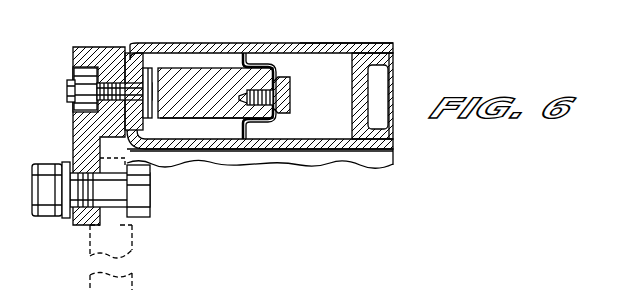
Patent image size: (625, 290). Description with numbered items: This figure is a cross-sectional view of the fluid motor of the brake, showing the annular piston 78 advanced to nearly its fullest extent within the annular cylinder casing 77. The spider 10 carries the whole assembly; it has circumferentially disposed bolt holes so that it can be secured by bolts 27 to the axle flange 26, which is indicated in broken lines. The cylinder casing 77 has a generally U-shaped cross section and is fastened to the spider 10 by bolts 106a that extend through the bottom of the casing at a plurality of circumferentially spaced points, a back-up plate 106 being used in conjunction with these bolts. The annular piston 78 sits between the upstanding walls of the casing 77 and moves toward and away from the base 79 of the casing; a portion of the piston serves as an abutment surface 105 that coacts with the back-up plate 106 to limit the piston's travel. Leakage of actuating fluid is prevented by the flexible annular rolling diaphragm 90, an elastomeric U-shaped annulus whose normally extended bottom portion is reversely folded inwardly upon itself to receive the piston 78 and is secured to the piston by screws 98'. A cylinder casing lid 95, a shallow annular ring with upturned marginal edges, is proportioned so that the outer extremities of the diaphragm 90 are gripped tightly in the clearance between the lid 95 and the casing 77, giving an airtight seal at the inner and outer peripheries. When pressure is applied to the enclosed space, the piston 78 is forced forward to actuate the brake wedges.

The spider 10 is at (85, 53).
The base of the casing 79 is at (128, 57).
The back-up plate 106 is at (145, 68).
The bolts 106a is at (175, 67).
The annular piston 78 is at (180, 62).
The annular cylinder casing 77 is at (225, 47).
The abutment surface 105 is at (163, 113).
The flexible annular rolling diaphragm 90 is at (341, 47).
The cylinder casing lid 95 is at (365, 84).
The screws 98' is at (284, 95).
The bolts 27 is at (150, 198).
The axle flange 26 is at (138, 250).